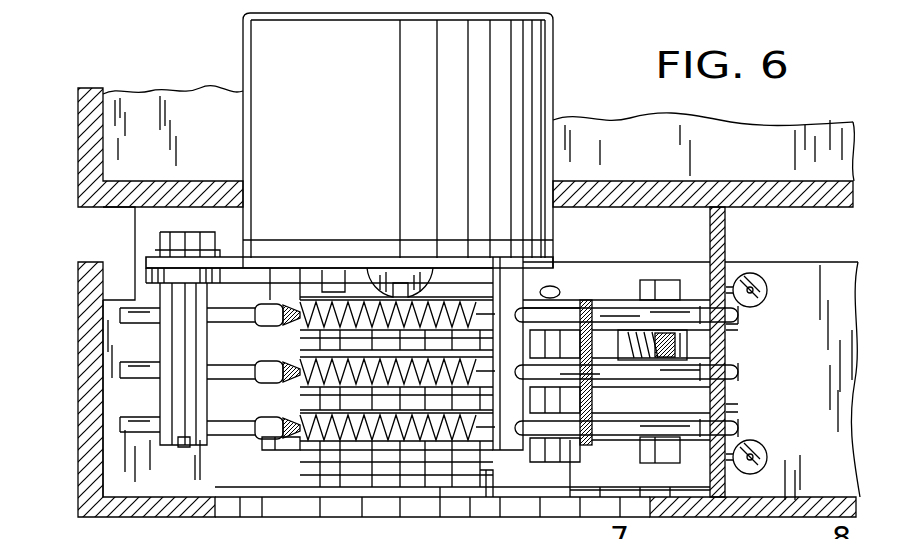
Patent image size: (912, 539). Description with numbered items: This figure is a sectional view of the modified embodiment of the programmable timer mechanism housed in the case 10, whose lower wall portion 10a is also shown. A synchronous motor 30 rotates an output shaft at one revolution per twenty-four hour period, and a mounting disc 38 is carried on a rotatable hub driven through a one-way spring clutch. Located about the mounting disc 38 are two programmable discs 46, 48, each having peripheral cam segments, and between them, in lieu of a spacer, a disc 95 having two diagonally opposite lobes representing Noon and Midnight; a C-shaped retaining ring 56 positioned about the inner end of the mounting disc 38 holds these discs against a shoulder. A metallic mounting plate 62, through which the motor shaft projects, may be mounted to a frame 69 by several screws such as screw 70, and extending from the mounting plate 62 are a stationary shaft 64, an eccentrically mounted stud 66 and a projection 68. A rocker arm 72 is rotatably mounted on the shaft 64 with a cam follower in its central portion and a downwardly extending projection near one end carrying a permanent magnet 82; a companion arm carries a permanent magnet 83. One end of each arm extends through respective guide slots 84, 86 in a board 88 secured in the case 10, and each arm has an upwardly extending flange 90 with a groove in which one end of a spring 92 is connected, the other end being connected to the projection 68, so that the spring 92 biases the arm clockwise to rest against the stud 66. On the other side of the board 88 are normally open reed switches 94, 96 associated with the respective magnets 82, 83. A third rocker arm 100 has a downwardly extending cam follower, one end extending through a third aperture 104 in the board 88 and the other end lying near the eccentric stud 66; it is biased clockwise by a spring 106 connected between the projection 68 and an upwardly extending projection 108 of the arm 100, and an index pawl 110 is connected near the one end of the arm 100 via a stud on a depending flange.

The case 10 is at (82, 131).
The housing lower wall 10a is at (80, 312).
The synchronous motor 30 is at (272, 45).
The frame 69 is at (650, 182).
The board 88 is at (722, 236).
The spring 92 is at (350, 300).
The screw 70 is at (380, 276).
The programmable disc 48 is at (587, 300).
The permanent magnet 83 is at (673, 287).
The C-shaped retaining ring 56 is at (551, 288).
The reed switch 96 is at (768, 293).
The mounting plate 62 is at (252, 273).
The guide slot 86 is at (735, 329).
The flange 90 is at (258, 320).
The third aperture 104 is at (737, 372).
The third rocker arm 100 is at (142, 370).
The projection 108 is at (258, 374).
The spring 106 is at (373, 390).
The disc 95 is at (580, 388).
The index pawl 110 is at (662, 363).
The guide slot 84 is at (735, 411).
The eccentrically mounted stud 66 is at (166, 446).
The stationary shaft 64 is at (281, 451).
The programmable disc 46 is at (580, 443).
The rocker arm 72 is at (618, 438).
The permanent magnet 82 is at (662, 458).
The reed switch 94 is at (762, 452).
The mounting disc 38 is at (441, 507).
The projection 68 is at (516, 457).